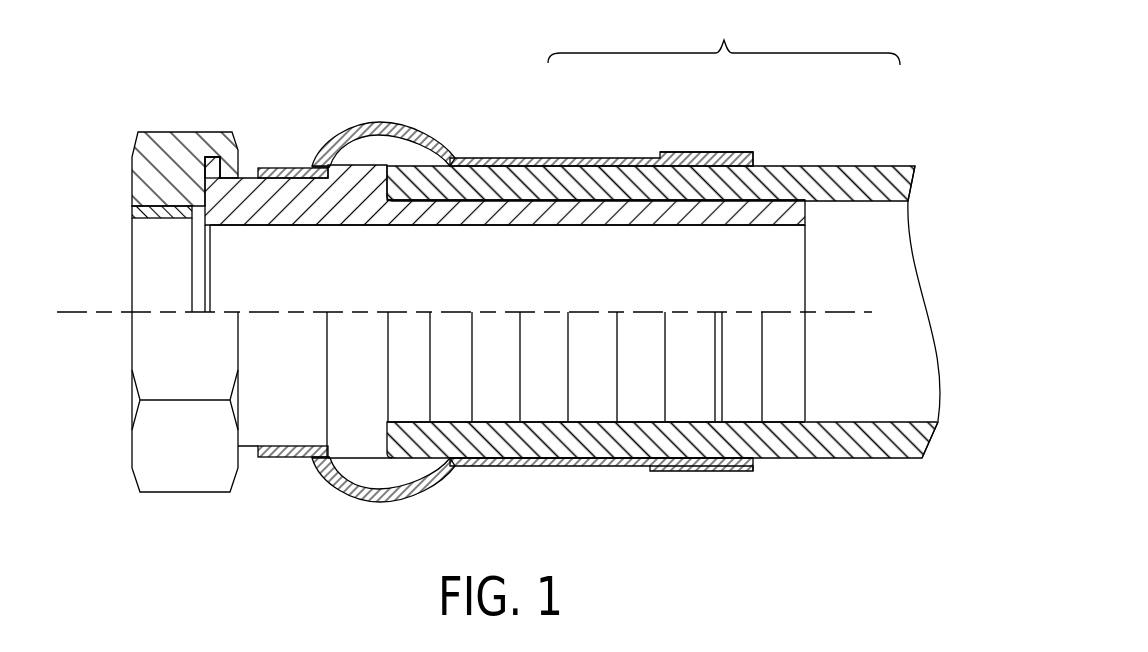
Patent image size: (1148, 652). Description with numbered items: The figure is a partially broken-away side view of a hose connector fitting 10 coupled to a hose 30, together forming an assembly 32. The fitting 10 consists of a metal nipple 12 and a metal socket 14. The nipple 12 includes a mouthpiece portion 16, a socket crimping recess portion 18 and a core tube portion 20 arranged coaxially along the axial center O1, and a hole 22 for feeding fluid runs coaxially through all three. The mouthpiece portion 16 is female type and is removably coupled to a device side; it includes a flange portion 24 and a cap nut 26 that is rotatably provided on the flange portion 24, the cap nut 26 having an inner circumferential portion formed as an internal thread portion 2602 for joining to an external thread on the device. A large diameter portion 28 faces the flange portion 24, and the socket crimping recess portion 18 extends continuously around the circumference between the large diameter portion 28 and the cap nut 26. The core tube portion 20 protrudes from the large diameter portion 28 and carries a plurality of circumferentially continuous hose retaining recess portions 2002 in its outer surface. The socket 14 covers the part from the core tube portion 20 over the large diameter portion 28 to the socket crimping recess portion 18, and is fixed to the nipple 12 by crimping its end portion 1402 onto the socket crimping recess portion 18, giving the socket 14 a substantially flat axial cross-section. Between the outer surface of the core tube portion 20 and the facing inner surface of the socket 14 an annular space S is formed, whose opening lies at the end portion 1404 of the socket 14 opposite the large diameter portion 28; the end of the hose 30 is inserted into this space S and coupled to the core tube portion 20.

The hose connector fitting 10 is at (561, 131).
The nipple 12 is at (510, 195).
The socket 14 is at (718, 152).
The end portion of the socket 1402 is at (277, 168).
The end portion of the socket 1404 is at (722, 146).
The mouthpiece portion 16 is at (257, 177).
The socket crimping recess portion 18 is at (294, 166).
The core tube portion 20 is at (588, 198).
The hose retaining recess portions 2002 is at (656, 197).
The hole 22 is at (533, 280).
The flange portion 24 is at (220, 156).
The cap nut 26 is at (153, 132).
The internal thread portion 2602 is at (155, 219).
The large diameter portion 28 is at (368, 125).
The hose 30 is at (850, 162).
The assembly 32 is at (724, 37).
The axial center O1 is at (78, 314).
The annular space S is at (590, 440).